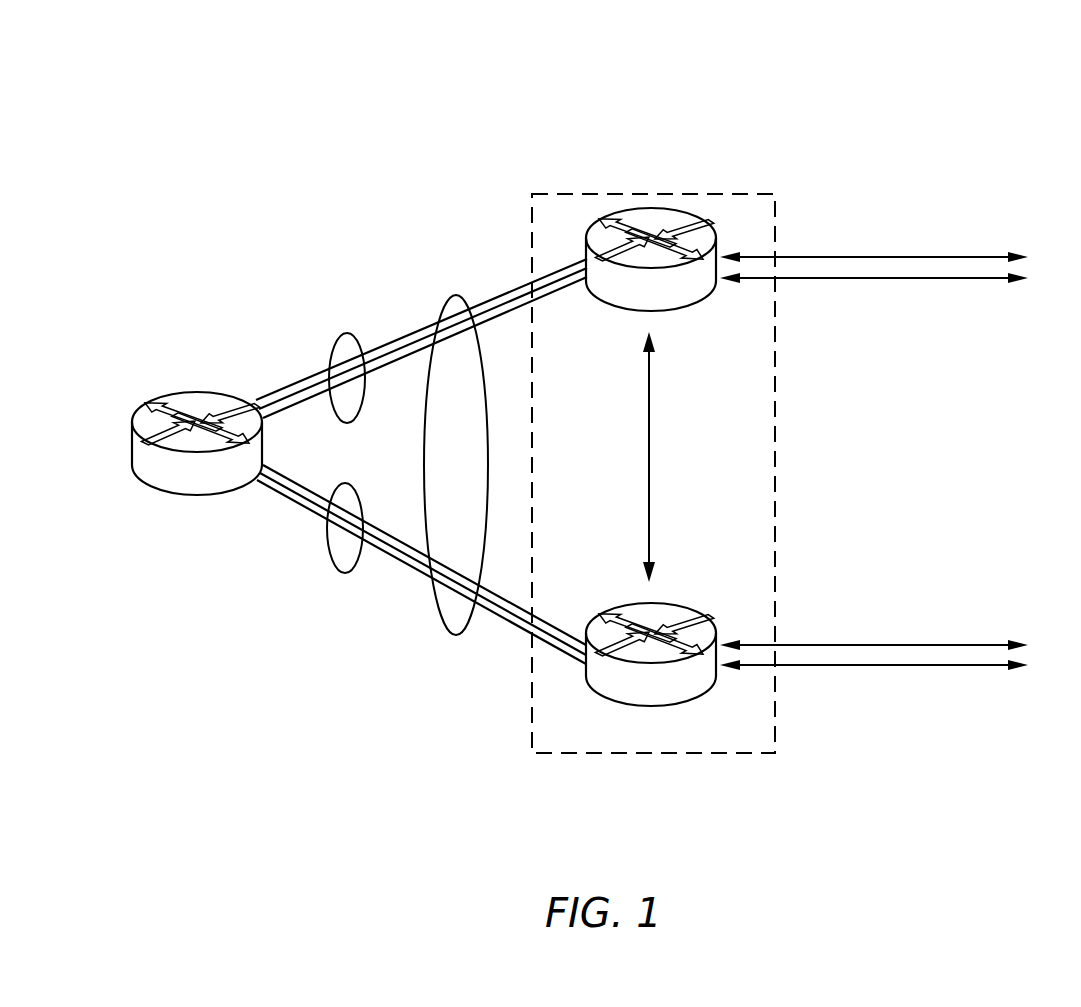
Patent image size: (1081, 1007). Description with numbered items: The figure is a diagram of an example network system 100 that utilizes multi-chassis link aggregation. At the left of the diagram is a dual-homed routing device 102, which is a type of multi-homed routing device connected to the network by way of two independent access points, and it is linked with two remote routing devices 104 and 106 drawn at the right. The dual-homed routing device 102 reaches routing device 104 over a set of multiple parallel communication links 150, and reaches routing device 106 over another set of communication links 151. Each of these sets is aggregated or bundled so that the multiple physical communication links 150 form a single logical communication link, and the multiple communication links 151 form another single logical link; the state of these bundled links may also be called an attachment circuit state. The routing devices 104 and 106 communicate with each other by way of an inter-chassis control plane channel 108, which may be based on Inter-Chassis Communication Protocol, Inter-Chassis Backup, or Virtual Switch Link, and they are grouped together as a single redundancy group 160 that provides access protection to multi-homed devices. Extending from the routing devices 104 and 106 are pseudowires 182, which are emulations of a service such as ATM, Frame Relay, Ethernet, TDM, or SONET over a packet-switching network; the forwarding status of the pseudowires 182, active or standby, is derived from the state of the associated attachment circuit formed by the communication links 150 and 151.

The network system 100 is at (808, 92).
The dual-homed routing device 102 is at (190, 392).
The routing device 104 is at (652, 208).
The routing device 106 is at (653, 706).
The inter-chassis control plane channel 108 is at (667, 458).
The communication links 150 is at (345, 332).
The communication links 151 is at (345, 573).
The redundancy group 160 is at (775, 194).
The pseudowires 182 is at (900, 461).